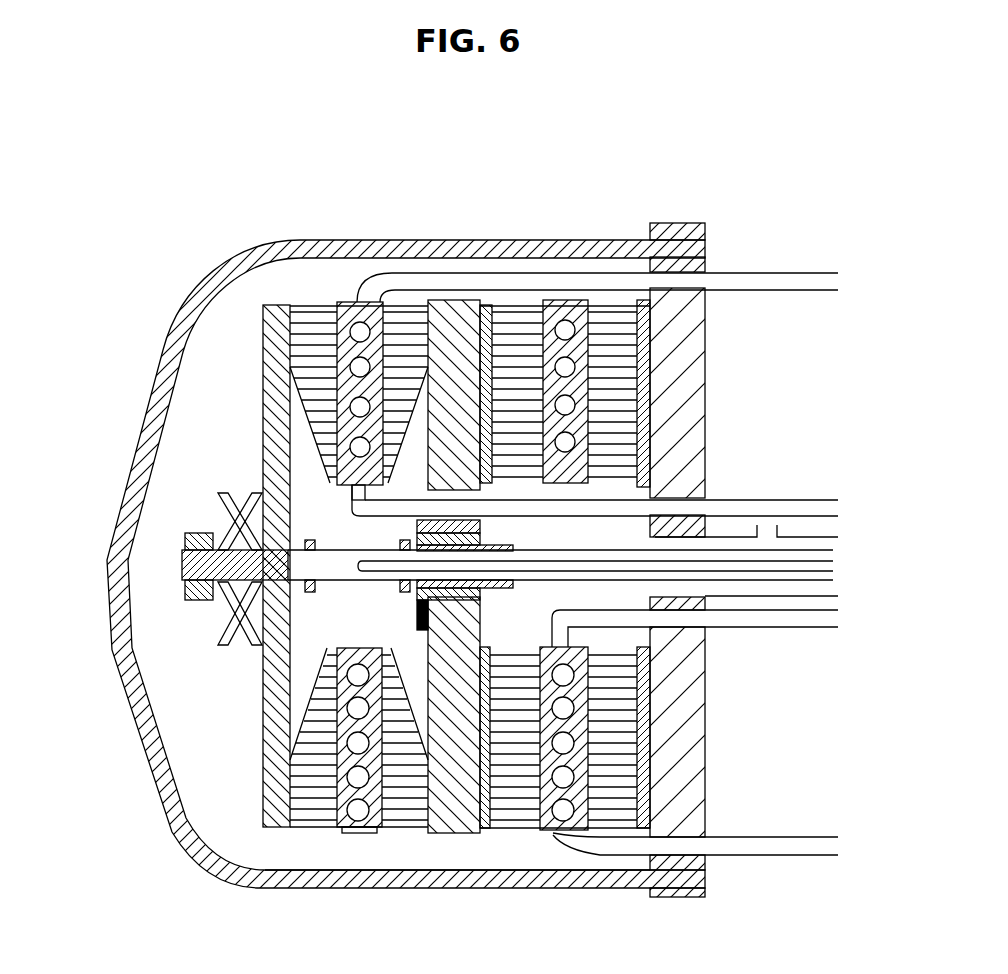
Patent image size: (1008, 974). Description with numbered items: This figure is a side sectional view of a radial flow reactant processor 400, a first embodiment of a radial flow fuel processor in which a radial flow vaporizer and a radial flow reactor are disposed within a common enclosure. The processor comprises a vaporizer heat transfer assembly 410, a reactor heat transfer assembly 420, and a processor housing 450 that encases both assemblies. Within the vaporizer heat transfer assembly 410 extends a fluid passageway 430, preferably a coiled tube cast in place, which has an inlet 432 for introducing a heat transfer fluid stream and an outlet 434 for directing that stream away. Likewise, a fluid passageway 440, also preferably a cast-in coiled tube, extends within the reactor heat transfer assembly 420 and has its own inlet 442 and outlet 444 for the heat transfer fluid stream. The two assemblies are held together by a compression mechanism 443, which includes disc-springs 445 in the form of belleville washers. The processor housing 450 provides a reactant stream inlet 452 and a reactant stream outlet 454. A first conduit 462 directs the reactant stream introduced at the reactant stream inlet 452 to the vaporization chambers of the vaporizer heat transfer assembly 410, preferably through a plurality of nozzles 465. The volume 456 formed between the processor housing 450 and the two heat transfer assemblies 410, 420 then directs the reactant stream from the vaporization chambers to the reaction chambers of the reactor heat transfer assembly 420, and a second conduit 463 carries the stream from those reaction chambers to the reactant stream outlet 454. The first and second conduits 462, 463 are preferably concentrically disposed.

The radial flow reactant processor 400 is at (178, 228).
The vaporizer heat transfer assembly 410 is at (339, 298).
The reactor heat transfer assembly 420 is at (546, 835).
The fluid passageway 430 is at (355, 333).
The inlet 432 is at (625, 482).
The outlet 434 is at (832, 282).
The fluid passageway 440 is at (567, 670).
The inlet 442 is at (832, 845).
The compression mechanism 443 is at (183, 602).
The outlet 444 is at (838, 617).
The disc-springs 445 is at (215, 503).
The processor housing 450 is at (628, 238).
The reactant stream inlet 452 is at (845, 545).
The reactant stream outlet 454 is at (767, 522).
The volume 456 is at (348, 858).
The first conduit 462 is at (818, 562).
The second conduit 463 is at (780, 594).
The nozzles 465 is at (308, 600).